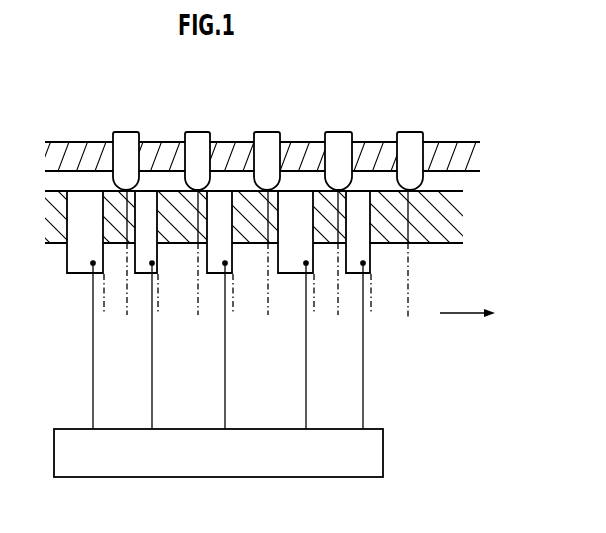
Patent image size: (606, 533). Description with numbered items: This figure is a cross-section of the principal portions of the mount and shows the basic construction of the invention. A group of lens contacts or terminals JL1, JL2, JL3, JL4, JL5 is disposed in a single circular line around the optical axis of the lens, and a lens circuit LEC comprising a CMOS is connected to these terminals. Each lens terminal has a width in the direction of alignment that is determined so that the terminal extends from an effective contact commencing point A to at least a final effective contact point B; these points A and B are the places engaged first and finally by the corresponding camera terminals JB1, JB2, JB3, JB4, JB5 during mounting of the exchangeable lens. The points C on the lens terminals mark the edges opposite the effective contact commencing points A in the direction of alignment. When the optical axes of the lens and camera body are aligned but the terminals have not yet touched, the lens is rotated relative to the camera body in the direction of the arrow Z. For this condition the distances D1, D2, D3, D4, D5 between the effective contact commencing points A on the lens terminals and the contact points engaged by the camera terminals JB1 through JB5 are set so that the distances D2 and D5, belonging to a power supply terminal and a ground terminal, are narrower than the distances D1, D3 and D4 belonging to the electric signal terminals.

The camera terminal JB1 is at (408, 143).
The camera terminal JB2 is at (340, 143).
The camera terminal JB3 is at (268, 143).
The camera terminal JB4 is at (198, 145).
The camera terminal JB5 is at (128, 147).
The lens terminal JL1 is at (358, 263).
The lens terminal JL2 is at (292, 263).
The lens terminal JL3 is at (217, 274).
The lens terminal JL4 is at (146, 274).
The lens terminal JL5 is at (82, 263).
The distance D1 is at (408, 320).
The distance D2 is at (338, 320).
The distance D3 is at (268, 320).
The distance D4 is at (198, 320).
The distance D5 is at (127, 320).
The effective contact commencing point A is at (243, 180).
The final effective contact point B is at (227, 180).
The edge opposite the effective contact commencing point C is at (211, 180).
The lens circuit LEC is at (378, 429).
The arrow indicating direction of rotation Z is at (467, 325).